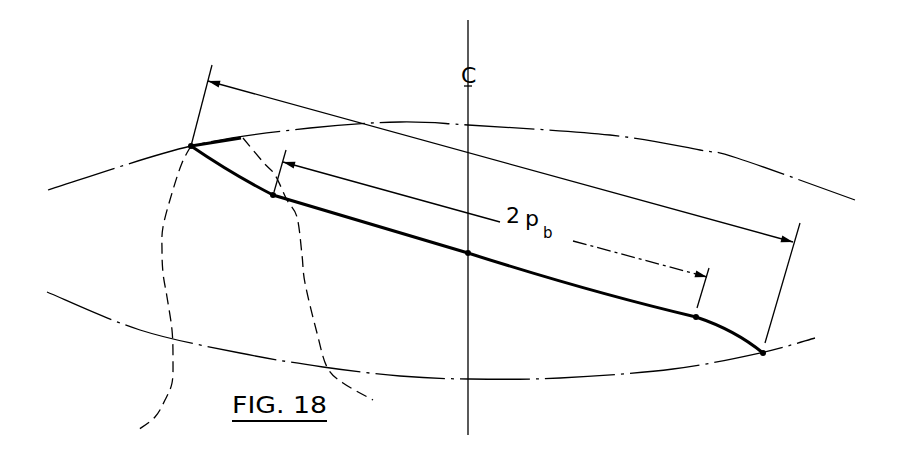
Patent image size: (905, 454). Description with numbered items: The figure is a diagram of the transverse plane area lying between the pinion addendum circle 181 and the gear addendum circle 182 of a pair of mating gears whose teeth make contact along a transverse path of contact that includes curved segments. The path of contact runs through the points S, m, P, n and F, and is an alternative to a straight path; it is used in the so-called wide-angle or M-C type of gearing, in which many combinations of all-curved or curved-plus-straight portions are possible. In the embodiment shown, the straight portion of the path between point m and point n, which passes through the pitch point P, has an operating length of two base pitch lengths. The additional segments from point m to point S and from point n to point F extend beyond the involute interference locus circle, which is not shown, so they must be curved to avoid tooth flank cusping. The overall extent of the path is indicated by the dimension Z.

The pinion addendum circle 181 is at (675, 141).
The gear addendum circle 182 is at (612, 376).
The end point F of the path of contact F is at (180, 135).
The point n of the path of contact n is at (266, 208).
The pitch point P is at (455, 264).
The point m of the path of contact m is at (686, 329).
The end point S of the path of contact S is at (770, 365).
The dimension Z is at (500, 161).